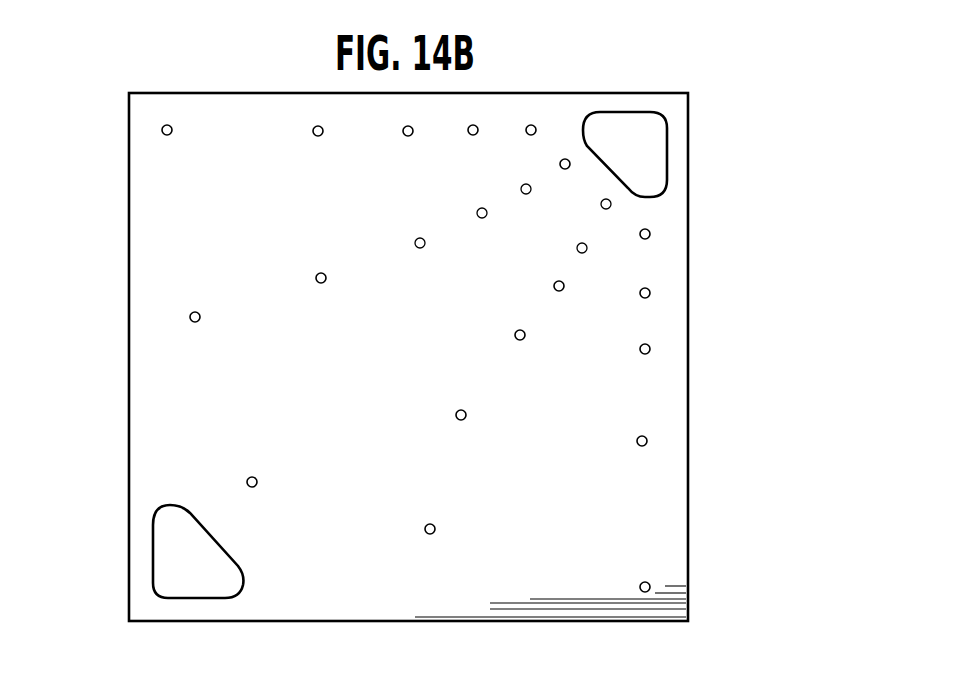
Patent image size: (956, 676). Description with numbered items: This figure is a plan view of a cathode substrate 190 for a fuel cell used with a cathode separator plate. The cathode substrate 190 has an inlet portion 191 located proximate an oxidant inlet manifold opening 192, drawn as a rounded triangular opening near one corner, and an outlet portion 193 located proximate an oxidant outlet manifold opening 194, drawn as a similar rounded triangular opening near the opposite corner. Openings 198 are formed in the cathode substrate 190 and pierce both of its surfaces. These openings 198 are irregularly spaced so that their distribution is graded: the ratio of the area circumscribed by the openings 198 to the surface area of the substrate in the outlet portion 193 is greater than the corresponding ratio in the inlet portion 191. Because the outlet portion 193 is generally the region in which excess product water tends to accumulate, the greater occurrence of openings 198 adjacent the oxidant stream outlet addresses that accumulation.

The cathode substrate 190 is at (645, 58).
The inlet portion 191 is at (272, 409).
The oxidant inlet manifold opening 192 is at (167, 532).
The outlet portion 193 is at (565, 232).
The oxidant outlet manifold opening 194 is at (653, 161).
The openings 198 is at (466, 413).